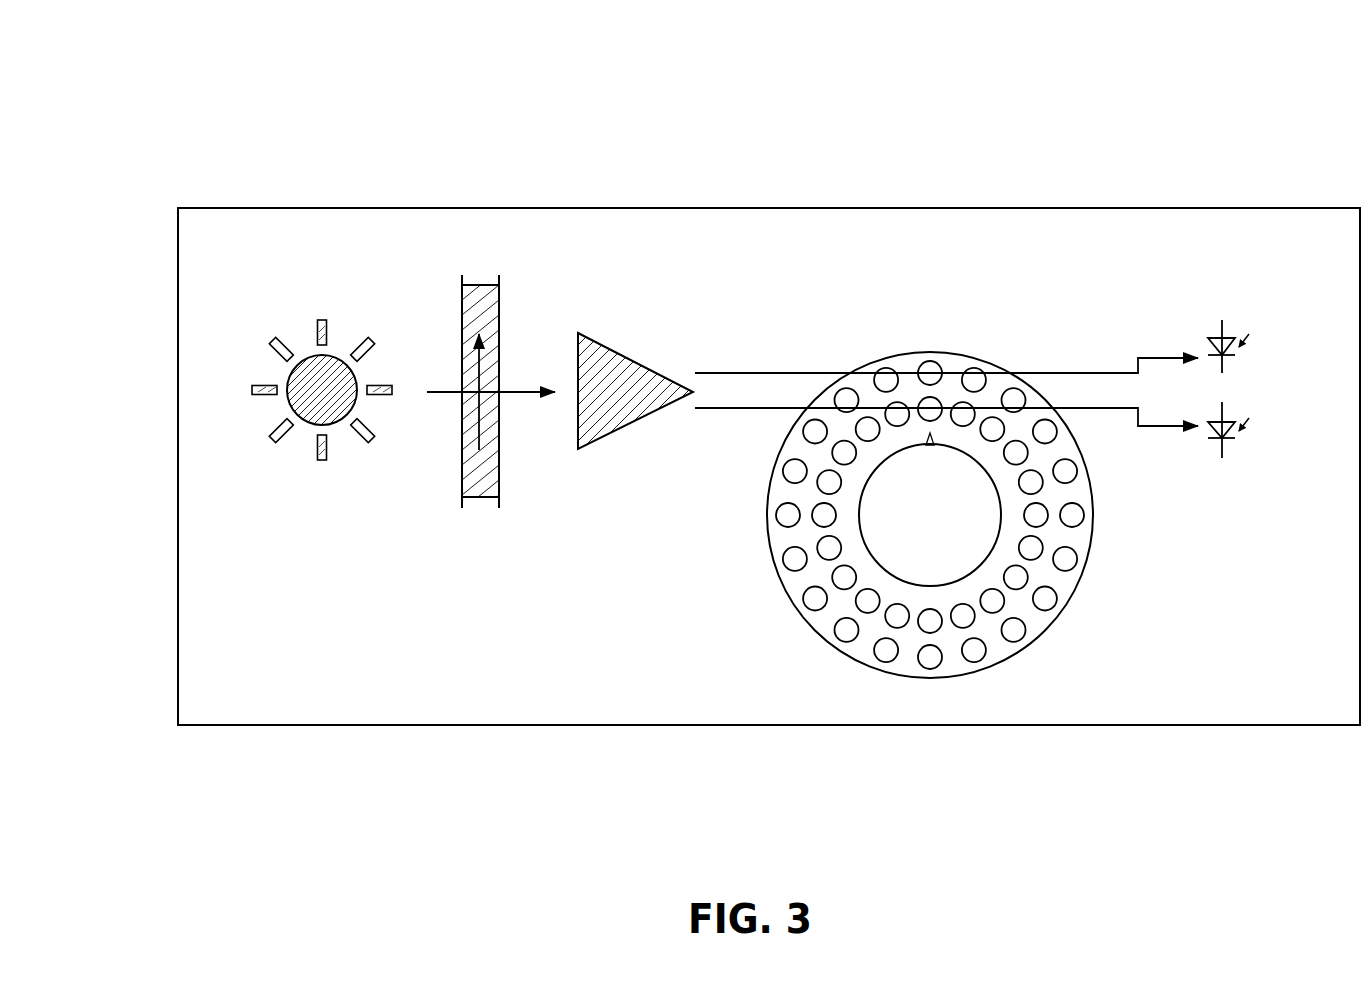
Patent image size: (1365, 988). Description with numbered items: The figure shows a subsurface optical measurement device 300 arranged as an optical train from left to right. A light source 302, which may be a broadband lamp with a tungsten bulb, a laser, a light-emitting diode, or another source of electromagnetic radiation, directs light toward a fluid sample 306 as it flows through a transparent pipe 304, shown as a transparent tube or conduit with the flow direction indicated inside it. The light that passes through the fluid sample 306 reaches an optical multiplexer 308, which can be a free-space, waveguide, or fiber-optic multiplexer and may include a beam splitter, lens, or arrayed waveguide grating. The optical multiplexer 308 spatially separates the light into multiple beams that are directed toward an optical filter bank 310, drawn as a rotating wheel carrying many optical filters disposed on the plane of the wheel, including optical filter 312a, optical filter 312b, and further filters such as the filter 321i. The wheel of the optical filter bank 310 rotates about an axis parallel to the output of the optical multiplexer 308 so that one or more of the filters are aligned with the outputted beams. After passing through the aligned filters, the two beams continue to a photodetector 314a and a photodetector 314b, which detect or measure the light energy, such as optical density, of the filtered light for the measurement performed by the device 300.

The subsurface optical measurement device 300 is at (120, 56).
The light source 302 is at (320, 318).
The transparent pipe 304 is at (500, 315).
The fluid sample 306 is at (480, 283).
The optical multiplexer 308 is at (636, 362).
The optical filter bank 310 is at (813, 628).
The optical filter 312a is at (932, 370).
The optical filter 312b is at (925, 407).
The photodetector 314a is at (1223, 327).
The photodetector 314b is at (1223, 410).
The aperture hole 321i is at (1013, 627).